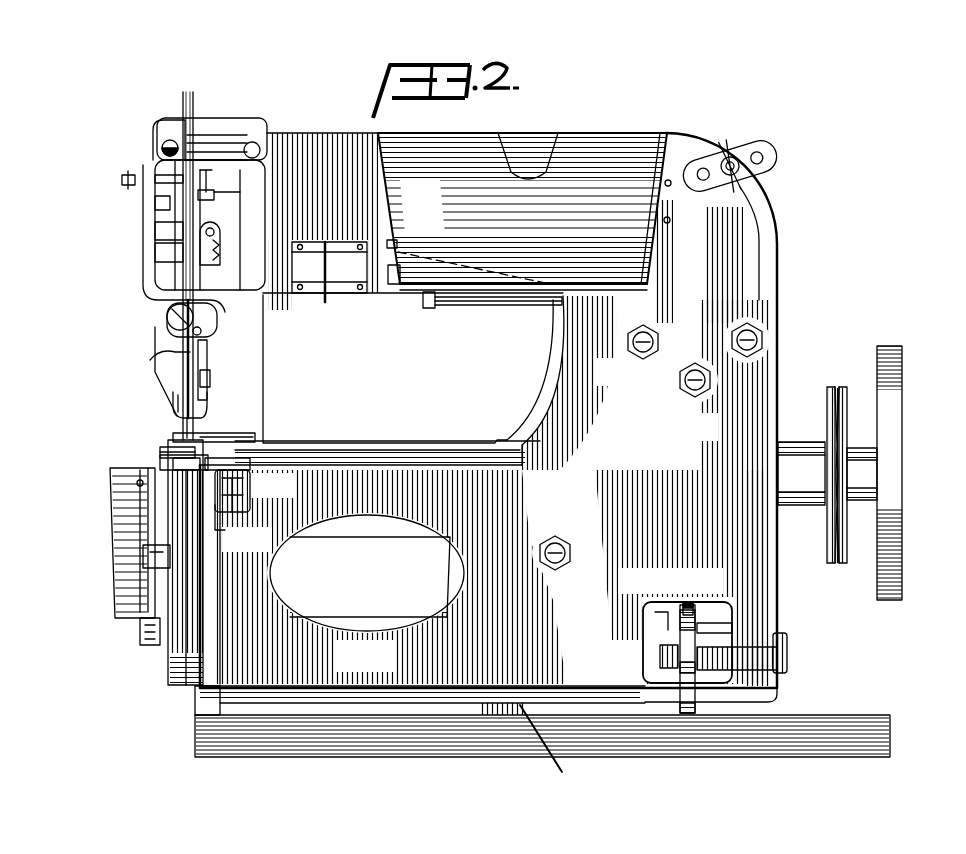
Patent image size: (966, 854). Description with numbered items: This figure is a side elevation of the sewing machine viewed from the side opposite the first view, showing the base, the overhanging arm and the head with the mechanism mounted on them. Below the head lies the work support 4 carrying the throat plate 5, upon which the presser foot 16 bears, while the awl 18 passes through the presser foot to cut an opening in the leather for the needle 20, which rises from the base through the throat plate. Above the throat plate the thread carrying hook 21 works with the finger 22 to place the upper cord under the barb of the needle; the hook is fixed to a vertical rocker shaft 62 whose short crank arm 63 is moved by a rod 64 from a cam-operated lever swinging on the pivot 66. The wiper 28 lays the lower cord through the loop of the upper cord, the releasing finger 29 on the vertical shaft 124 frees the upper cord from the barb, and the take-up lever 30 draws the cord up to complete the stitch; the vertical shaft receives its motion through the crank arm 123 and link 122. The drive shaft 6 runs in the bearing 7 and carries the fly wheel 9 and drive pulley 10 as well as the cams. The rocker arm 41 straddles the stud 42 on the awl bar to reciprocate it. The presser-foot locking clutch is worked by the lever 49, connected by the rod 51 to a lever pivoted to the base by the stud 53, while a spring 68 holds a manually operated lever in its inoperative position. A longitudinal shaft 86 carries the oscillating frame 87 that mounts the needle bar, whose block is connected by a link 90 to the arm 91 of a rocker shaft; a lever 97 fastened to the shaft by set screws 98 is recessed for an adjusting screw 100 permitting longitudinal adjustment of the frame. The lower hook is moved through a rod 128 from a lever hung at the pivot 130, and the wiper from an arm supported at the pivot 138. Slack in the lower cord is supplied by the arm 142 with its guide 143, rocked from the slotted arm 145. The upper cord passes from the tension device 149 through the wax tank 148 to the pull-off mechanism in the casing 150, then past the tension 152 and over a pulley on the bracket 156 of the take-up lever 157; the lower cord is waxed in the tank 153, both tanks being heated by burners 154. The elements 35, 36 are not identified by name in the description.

The work support 4 is at (258, 441).
The throat plate 5 is at (237, 433).
The drive shaft 6 is at (830, 473).
The bearing 7 is at (798, 480).
The fly wheel 9 is at (900, 416).
The drive pulley 10 is at (828, 420).
The presser foot 16 is at (207, 398).
The awl 18 is at (188, 92).
The needle 20 is at (191, 434).
The thread carrying hook 21 is at (185, 407).
The finger 22 is at (186, 428).
The wiper 28 is at (165, 441).
The releasing finger 29 is at (160, 453).
The take-up lever 30 is at (212, 140).
The presser bar guide 35 is at (163, 172).
The set screw 36 is at (122, 181).
The rocker arm 41 is at (160, 231).
The stud 42 is at (155, 253).
The lever 49 is at (167, 341).
The rod 51 is at (155, 205).
The stud 53 is at (637, 349).
The rocker shaft 62 is at (210, 378).
The crank arm 63 is at (217, 194).
The rod 64 is at (212, 192).
The pivotal support 66 is at (760, 338).
The spring 68 is at (222, 271).
The shaft 86 is at (488, 410).
The frame 87 is at (176, 673).
The link 90 is at (160, 580).
The arm 91 is at (145, 636).
The lever 97 is at (688, 678).
The set screws 98 is at (691, 603).
The adjusting screw 100 is at (778, 675).
The link 122 is at (237, 528).
The crank arm 123 is at (226, 500).
The vertical shaft 124 is at (180, 483).
The rod 128 is at (370, 541).
The pivotal connection 130 is at (694, 398).
The pivotal support 138 is at (556, 571).
The arm 142 is at (148, 498).
The guide 143 is at (136, 484).
The slotted arm 145 is at (673, 614).
The tank 148 is at (598, 135).
The tension device 149 is at (742, 143).
The casing 150 is at (325, 303).
The tension 152 is at (160, 356).
The tank 153 is at (118, 516).
The burners 154 is at (470, 308).
The bracket 156 is at (166, 124).
The take-up lever 157 is at (262, 137).